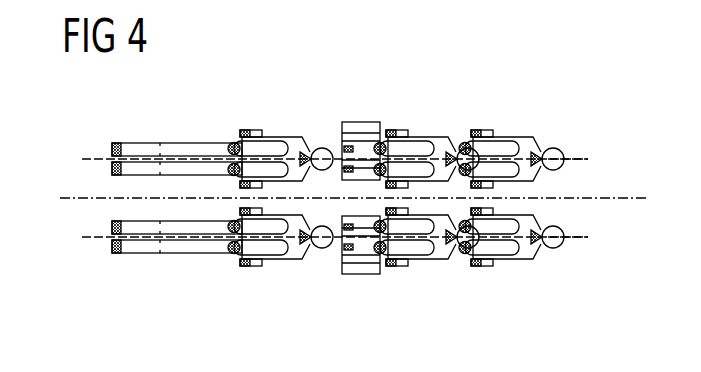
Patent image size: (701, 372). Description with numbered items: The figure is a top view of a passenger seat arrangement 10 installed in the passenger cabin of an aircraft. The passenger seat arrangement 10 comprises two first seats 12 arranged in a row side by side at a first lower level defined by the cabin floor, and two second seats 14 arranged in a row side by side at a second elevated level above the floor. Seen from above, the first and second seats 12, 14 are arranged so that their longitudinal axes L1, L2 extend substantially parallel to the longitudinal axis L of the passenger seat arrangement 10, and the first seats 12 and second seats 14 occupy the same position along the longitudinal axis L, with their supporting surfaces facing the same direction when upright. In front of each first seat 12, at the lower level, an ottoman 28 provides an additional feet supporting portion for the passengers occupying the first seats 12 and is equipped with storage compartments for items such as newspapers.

The passenger seat arrangement 10 is at (500, 72).
The first seat 12 is at (444, 123).
The second seat 14 is at (292, 126).
The ottoman 28 is at (366, 120).
The longitudinal axis L is at (610, 197).
The longitudinal axis L1 is at (580, 158).
The longitudinal axis L2 is at (95, 158).